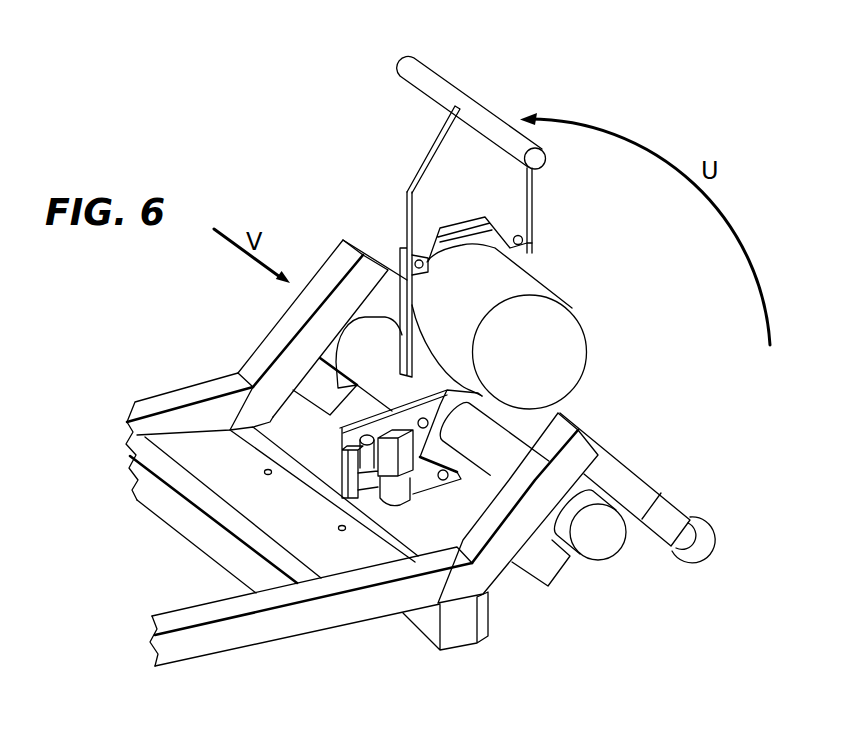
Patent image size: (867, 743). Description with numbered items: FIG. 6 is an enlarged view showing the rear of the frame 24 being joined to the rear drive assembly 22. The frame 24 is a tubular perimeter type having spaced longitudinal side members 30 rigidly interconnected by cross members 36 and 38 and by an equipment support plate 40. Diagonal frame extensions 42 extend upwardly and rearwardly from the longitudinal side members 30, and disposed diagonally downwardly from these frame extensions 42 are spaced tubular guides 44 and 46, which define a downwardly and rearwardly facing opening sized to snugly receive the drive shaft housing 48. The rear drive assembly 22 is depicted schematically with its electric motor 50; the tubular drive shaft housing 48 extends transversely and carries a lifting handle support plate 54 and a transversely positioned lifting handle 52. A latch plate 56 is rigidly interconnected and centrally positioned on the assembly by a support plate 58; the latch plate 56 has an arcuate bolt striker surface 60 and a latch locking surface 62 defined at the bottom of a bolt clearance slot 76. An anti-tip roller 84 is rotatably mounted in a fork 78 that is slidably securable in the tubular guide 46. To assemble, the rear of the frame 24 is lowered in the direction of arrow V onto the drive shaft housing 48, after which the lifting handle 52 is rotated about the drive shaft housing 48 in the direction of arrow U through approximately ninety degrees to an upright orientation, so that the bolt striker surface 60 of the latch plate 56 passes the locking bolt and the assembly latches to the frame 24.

The rear drive assembly 22 is at (525, 326).
The frame 24 is at (182, 378).
The longitudinal side members 30 is at (258, 646).
The cross member 36 is at (205, 553).
The cross member 38 is at (418, 638).
The equipment support plate 40 is at (190, 458).
The diagonal frame extensions 42 is at (580, 442).
The tubular guide 44 is at (543, 567).
The tubular guide 46 is at (612, 473).
The drive shaft housing 48 is at (530, 428).
The electric motor 50 is at (560, 330).
The lifting handle 52 is at (452, 93).
The lifting handle support plate 54 is at (513, 203).
The latch plate 56 is at (402, 478).
The support plate 58 is at (435, 488).
The bolt striker surface 60 is at (373, 493).
The latch locking surface 62 is at (340, 432).
The bolt clearance slot 76 is at (370, 438).
The fork 78 is at (673, 500).
The anti-tip roller 84 is at (717, 527).